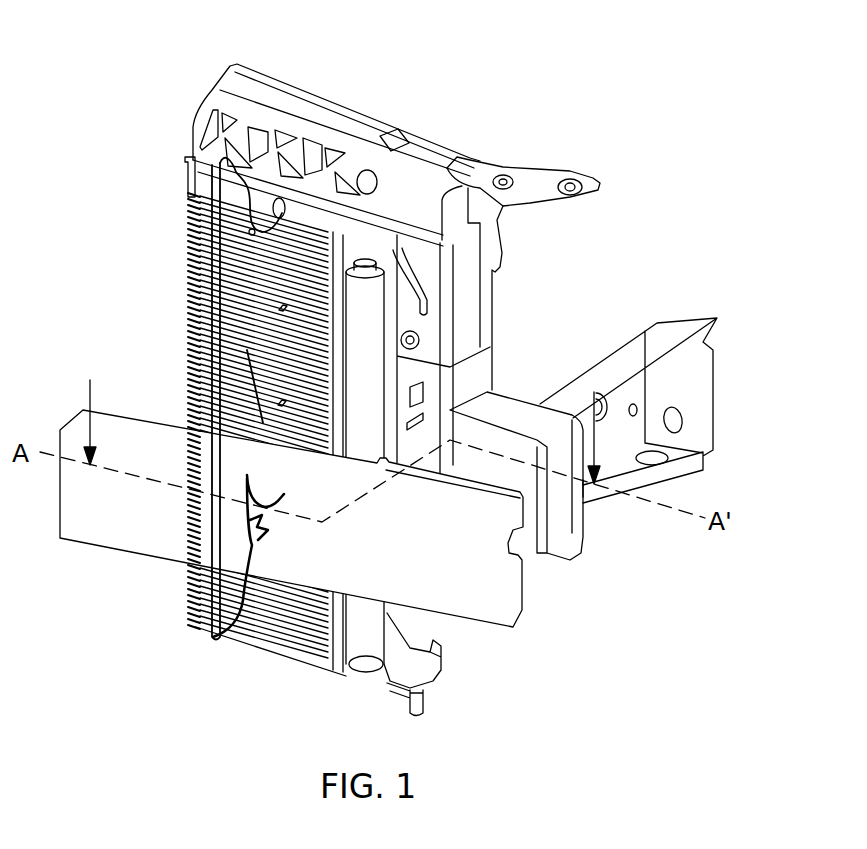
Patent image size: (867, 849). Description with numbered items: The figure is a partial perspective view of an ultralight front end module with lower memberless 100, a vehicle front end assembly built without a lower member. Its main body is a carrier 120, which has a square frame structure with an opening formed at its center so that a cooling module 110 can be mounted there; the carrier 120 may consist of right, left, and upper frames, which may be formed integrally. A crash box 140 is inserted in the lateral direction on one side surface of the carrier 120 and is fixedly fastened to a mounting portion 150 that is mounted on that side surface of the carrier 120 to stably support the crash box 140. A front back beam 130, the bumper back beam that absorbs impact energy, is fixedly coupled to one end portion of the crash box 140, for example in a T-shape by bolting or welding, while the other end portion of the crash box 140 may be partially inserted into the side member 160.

The ultralight front end module with lower memberless 100 is at (500, 104).
The cooling module 110 is at (192, 292).
The carrier 120 is at (478, 293).
The front back beam 130 is at (105, 517).
The crash box 140 is at (530, 553).
The mounting portion 150 is at (568, 510).
The side member 160 is at (622, 360).